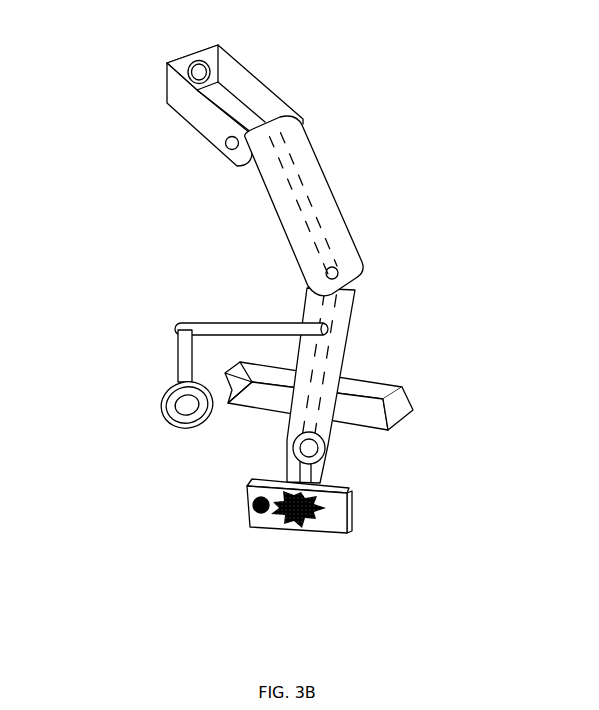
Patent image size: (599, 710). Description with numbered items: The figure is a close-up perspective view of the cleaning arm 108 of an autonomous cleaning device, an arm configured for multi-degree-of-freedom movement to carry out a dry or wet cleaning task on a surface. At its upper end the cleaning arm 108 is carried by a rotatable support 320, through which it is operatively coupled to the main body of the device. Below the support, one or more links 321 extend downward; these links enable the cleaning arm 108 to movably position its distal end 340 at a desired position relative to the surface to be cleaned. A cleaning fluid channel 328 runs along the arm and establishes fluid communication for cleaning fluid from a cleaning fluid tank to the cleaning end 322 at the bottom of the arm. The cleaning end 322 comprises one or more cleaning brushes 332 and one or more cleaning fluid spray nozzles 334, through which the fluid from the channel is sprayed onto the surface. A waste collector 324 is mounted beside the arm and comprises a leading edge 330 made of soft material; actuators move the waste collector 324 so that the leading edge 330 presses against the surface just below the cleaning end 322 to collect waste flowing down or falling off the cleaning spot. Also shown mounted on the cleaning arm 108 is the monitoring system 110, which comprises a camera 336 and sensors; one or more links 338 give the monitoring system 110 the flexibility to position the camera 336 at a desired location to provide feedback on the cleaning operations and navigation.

The cleaning arm 108 is at (148, 178).
The monitoring system 110 is at (160, 338).
The rotatable support 320 is at (260, 73).
The links 321 is at (330, 185).
The cleaning end 322 is at (363, 515).
The waste collector 324 is at (412, 395).
The cleaning fluid channel 328 is at (325, 247).
The leading edge 330 is at (232, 409).
The cleaning brushes 332 is at (275, 522).
The cleaning fluid spray nozzles 334 is at (250, 505).
The camera 336 is at (152, 418).
The links 338 is at (278, 322).
The distal end 340 is at (283, 440).